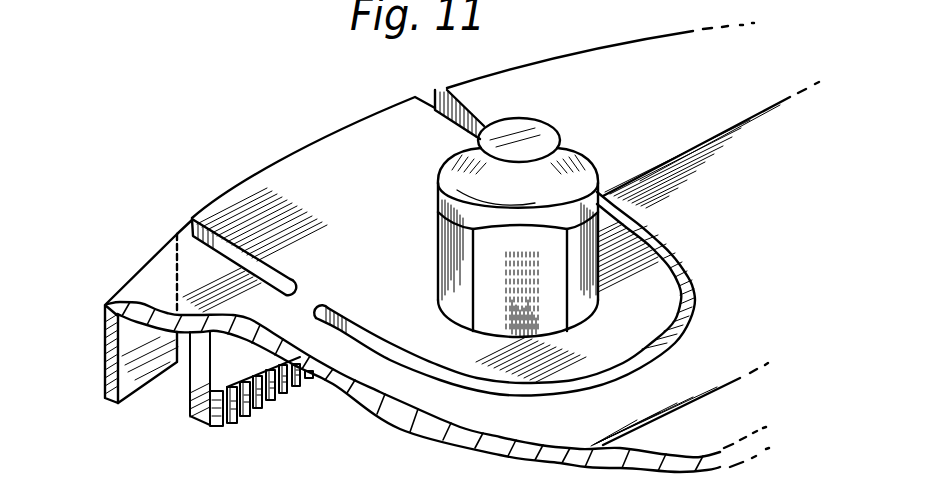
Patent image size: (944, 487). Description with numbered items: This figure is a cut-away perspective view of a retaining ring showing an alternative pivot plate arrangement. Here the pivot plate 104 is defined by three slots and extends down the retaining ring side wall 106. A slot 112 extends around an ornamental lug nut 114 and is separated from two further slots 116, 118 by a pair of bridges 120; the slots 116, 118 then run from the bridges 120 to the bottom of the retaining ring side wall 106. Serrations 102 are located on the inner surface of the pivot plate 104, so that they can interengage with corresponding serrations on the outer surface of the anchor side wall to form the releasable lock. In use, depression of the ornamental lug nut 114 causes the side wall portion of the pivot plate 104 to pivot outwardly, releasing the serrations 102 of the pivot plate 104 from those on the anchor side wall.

The serrations 102 is at (213, 428).
The pivot plate 104 is at (657, 222).
The retaining ring side wall 106 is at (107, 366).
The slot 112 is at (682, 306).
The ornamental lug nut 114 is at (598, 159).
The slot 116 is at (255, 226).
The slot 118 is at (472, 120).
The bridges 120 is at (310, 298).